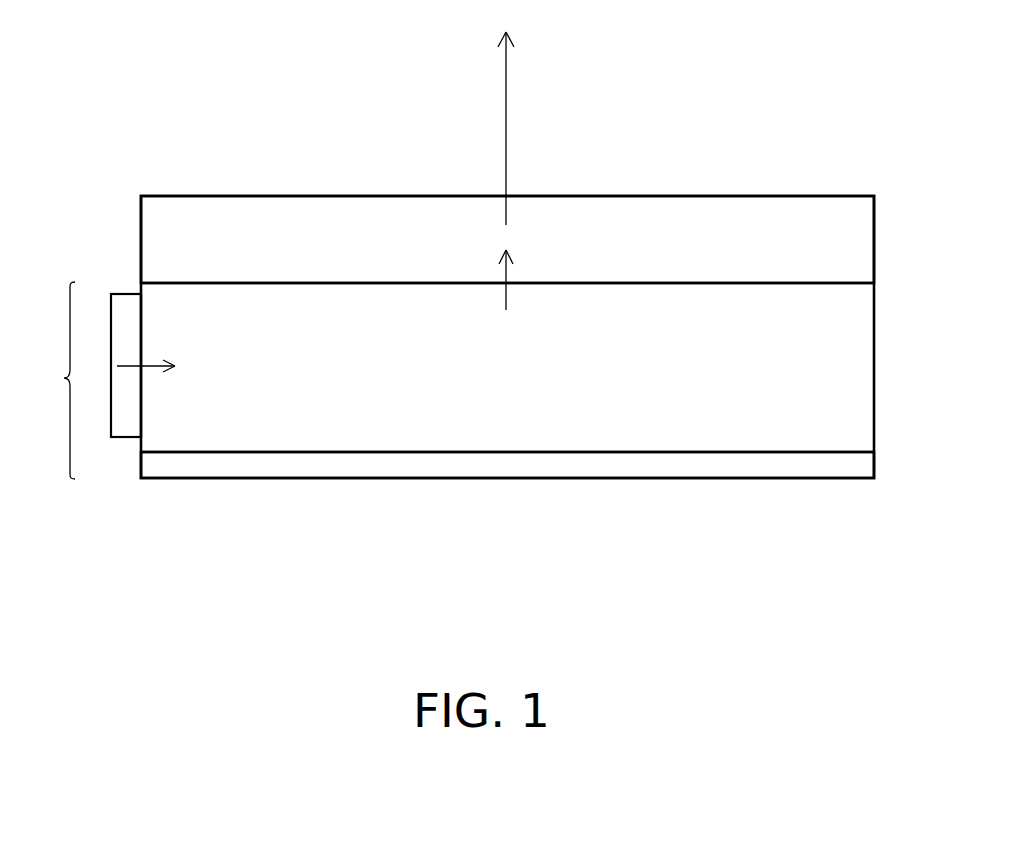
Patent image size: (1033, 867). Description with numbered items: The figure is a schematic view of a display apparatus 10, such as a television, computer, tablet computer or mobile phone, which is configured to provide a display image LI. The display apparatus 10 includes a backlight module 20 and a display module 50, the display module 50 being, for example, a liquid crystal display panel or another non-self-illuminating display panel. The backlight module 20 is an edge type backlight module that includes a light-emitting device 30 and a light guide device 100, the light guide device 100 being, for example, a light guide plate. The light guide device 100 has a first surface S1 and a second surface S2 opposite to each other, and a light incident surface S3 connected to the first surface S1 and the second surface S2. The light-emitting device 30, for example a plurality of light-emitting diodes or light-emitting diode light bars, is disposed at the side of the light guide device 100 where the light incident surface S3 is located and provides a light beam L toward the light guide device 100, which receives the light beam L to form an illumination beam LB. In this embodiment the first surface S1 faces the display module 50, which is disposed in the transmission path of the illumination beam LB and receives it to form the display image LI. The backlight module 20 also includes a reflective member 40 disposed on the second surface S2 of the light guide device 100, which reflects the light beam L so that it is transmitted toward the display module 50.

The display apparatus 10 is at (488, 314).
The backlight module 20 is at (52, 380).
The light-emitting device 30 is at (125, 430).
The reflective member 40 is at (316, 470).
The display module 50 is at (150, 207).
The light guide device 100 is at (865, 373).
The light beam L is at (137, 365).
The display image LI is at (506, 118).
The illumination beam LB is at (506, 273).
The first surface S1 is at (746, 282).
The second surface S2 is at (747, 452).
The light incident surface S3 is at (140, 405).